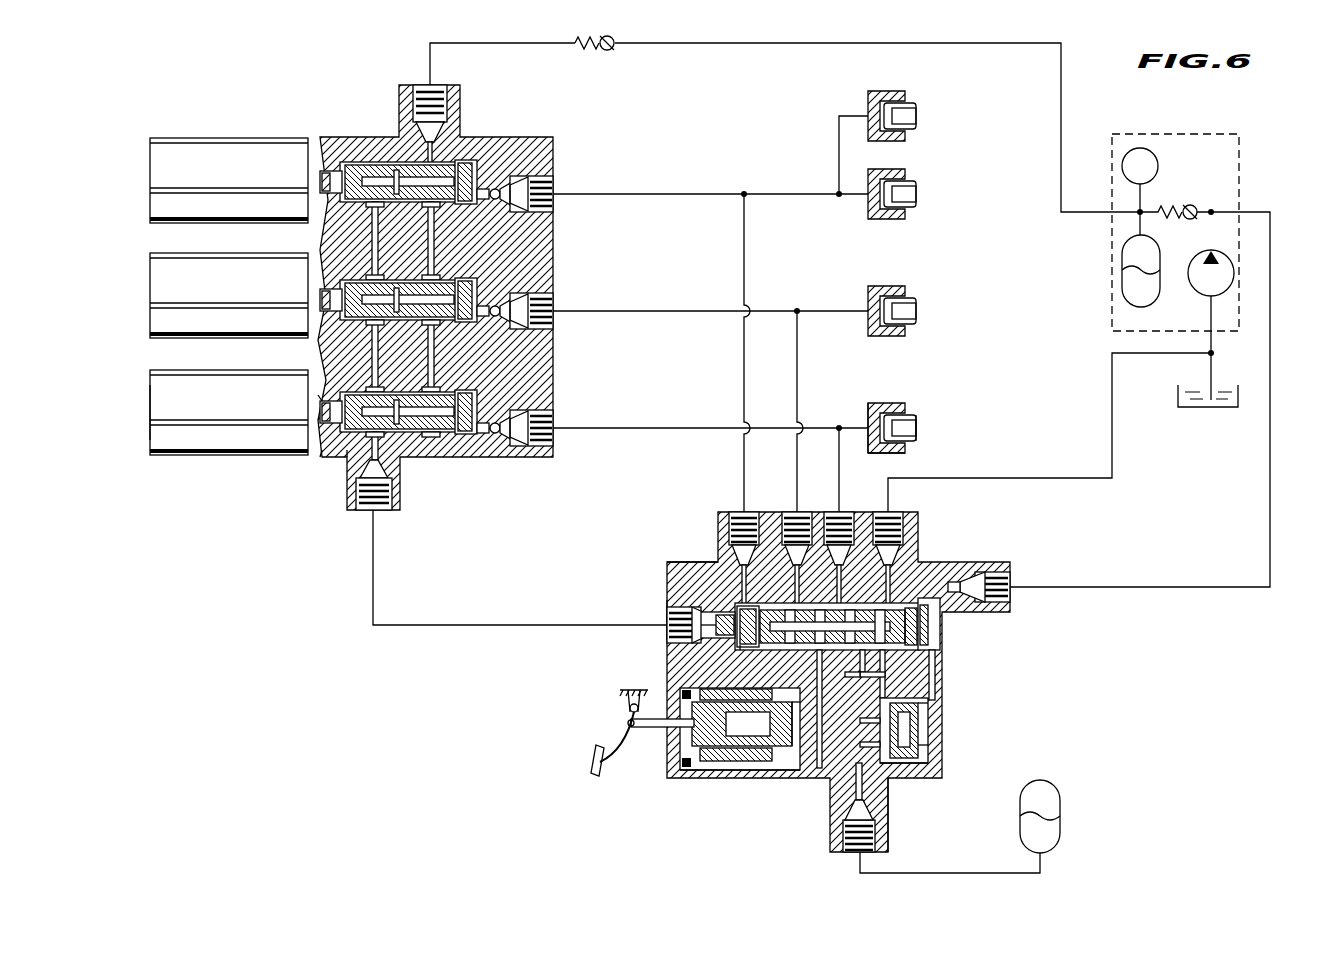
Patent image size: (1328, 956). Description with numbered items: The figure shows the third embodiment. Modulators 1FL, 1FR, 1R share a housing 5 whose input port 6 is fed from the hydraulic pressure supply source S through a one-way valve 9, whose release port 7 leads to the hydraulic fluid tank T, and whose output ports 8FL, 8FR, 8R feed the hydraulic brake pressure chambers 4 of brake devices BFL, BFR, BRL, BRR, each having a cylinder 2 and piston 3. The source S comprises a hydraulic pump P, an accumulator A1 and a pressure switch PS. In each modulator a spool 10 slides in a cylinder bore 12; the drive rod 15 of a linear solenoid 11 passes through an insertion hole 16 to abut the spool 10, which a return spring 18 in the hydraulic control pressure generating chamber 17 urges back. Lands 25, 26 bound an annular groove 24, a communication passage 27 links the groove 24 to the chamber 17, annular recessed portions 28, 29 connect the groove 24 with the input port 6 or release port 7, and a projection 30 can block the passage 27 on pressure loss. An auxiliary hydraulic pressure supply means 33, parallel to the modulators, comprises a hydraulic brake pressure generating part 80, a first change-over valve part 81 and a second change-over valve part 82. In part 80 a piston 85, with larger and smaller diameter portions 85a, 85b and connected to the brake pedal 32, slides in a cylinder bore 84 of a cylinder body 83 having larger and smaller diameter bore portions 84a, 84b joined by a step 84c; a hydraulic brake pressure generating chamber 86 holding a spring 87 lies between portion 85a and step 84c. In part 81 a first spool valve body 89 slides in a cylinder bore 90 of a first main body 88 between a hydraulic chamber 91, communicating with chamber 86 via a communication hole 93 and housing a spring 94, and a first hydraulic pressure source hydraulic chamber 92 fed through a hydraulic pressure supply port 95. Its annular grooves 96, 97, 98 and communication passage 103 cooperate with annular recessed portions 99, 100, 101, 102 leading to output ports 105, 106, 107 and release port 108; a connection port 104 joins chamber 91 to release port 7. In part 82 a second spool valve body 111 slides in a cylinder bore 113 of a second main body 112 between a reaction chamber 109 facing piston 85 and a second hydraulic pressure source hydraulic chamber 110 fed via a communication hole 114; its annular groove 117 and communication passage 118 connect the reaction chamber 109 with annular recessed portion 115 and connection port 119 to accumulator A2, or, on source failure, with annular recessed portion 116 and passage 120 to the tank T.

The modulator 1R is at (312, 222).
The modulator 1FR is at (312, 337).
The modulator 1FL is at (296, 458).
The cylinder 2 is at (874, 455).
The piston 3 is at (905, 440).
The hydraulic brake pressure chamber 4 is at (866, 412).
The housing 5 is at (553, 362).
The input port 6 is at (438, 90).
The release port 7 is at (380, 500).
The output port 8R is at (553, 200).
The output port 8FR is at (553, 322).
The output port 8FL is at (553, 432).
The one-way valve 9 is at (611, 51).
The spool 10 is at (464, 396).
The linear solenoid 11 is at (240, 406).
The first cylinder bore 12 is at (345, 454).
The drive rod 15 is at (322, 410).
The insertion hole 16 is at (316, 456).
The hydraulic control pressure generating chamber 17 is at (485, 420).
The return spring 18 is at (482, 438).
The annular groove 24 is at (408, 396).
The land 25 is at (364, 397).
The land 26 is at (436, 378).
The communication passage 27 is at (380, 440).
The annular recessed portion 28 is at (352, 478).
The annular recessed portion 29 is at (432, 440).
The projection 30 is at (497, 434).
The brake pedal 32 is at (590, 762).
The auxiliary hydraulic pressure supply means 33 is at (648, 563).
The hydraulic brake pressure generating part 80 is at (712, 772).
The first change-over valve part 81 is at (922, 566).
The second change-over valve part 82 is at (905, 783).
The cylinder body 83 is at (724, 772).
The cylinder bore 84 is at (800, 760).
The larger diameter bore portion 84a is at (686, 690).
The smaller diameter bore portion 84b is at (772, 772).
The step 84c is at (753, 726).
The piston 85 is at (742, 724).
The larger diameter portion 85a is at (692, 775).
The smaller diameter portion 85b is at (754, 687).
The hydraulic brake pressure generating chamber 86 is at (745, 790).
The spring 87 is at (680, 755).
The first main body 88 is at (688, 565).
The first spool valve body 89 is at (850, 678).
The cylinder bore 90 is at (915, 640).
The hydraulic chamber 91 is at (745, 614).
The first hydraulic pressure source hydraulic chamber 92 is at (922, 632).
The communication hole 93 is at (745, 652).
The spring 94 is at (740, 642).
The hydraulic pressure supply port 95 is at (1012, 592).
The annular groove 96 is at (790, 606).
The annular groove 97 is at (822, 606).
The annular groove 98 is at (908, 605).
The annular recessed portion 99 is at (748, 600).
The annular recessed portion 100 is at (800, 646).
The annular recessed portion 101 is at (852, 606).
The annular recessed portion 102 is at (885, 672).
The communication passage 103 is at (860, 645).
The connection port 104 is at (667, 618).
The output port 105 is at (732, 520).
The output port 106 is at (782, 520).
The output port 107 is at (828, 520).
The release port 108 is at (892, 520).
The reaction chamber 109 is at (819, 770).
The second hydraulic pressure source hydraulic chamber 110 is at (928, 730).
The second spool valve body 111 is at (918, 715).
The second main body 112 is at (930, 777).
The cylinder bore 113 is at (878, 781).
The communication hole 114 is at (886, 690).
The annular recessed portion 115 is at (878, 744).
The annular recessed portion 116 is at (925, 745).
The annular groove 117 is at (920, 702).
The communication passage 118 is at (878, 720).
The connection port 119 is at (850, 860).
The passage 120 is at (866, 668).
The accumulator A1 is at (1122, 300).
The accumulator A2 is at (1060, 832).
The right rear wheel brake device BRR is at (921, 101).
The left rear wheel brake device BRL is at (921, 171).
The right front wheel brake device BFR is at (921, 277).
The left front wheel brake device BFL is at (921, 395).
The hydraulic pump P is at (1200, 300).
The pressure switch PS is at (1158, 166).
The hydraulic pressure supply source S is at (1200, 133).
The hydraulic fluid tank T is at (1178, 398).